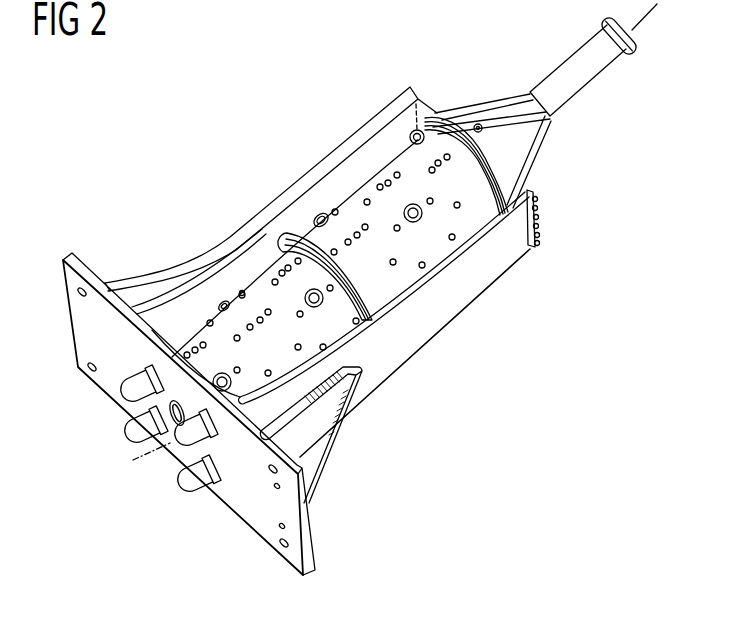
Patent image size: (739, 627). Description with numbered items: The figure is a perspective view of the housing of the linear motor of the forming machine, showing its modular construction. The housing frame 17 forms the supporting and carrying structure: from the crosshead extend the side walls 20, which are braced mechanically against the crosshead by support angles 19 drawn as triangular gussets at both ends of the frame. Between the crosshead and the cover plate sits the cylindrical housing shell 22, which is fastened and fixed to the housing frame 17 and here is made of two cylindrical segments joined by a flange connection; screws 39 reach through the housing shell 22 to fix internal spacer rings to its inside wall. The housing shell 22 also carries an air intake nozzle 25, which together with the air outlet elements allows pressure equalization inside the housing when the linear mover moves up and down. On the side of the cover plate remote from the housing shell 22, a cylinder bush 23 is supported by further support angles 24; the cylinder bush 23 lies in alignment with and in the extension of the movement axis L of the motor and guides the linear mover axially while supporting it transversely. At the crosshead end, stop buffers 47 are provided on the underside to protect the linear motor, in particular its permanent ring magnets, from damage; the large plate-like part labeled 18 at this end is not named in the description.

The housing frame 17 is at (410, 338).
The mounting plate 18 is at (93, 337).
The support angles 19 is at (147, 272).
The side walls 20 is at (367, 128).
The housing shell 22 is at (265, 285).
The cylinder bush 23 is at (592, 62).
The further support angles 24 is at (523, 157).
The air intake nozzle 25 is at (422, 213).
The screws 39 is at (335, 212).
The stop buffers 47 is at (183, 485).
The movement axis L is at (644, 14).